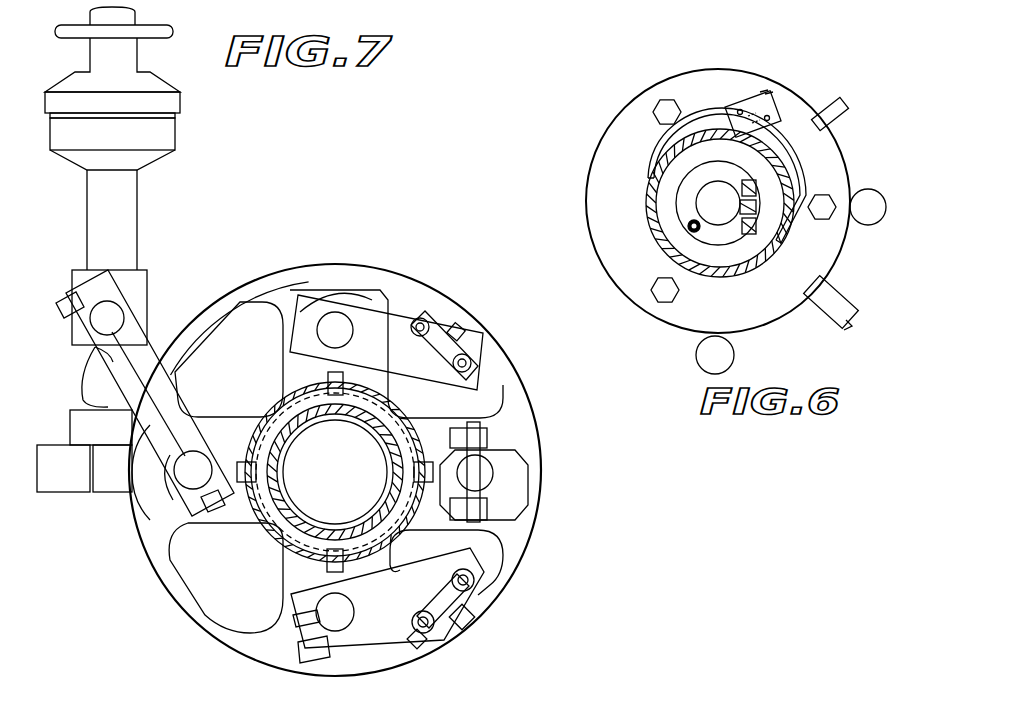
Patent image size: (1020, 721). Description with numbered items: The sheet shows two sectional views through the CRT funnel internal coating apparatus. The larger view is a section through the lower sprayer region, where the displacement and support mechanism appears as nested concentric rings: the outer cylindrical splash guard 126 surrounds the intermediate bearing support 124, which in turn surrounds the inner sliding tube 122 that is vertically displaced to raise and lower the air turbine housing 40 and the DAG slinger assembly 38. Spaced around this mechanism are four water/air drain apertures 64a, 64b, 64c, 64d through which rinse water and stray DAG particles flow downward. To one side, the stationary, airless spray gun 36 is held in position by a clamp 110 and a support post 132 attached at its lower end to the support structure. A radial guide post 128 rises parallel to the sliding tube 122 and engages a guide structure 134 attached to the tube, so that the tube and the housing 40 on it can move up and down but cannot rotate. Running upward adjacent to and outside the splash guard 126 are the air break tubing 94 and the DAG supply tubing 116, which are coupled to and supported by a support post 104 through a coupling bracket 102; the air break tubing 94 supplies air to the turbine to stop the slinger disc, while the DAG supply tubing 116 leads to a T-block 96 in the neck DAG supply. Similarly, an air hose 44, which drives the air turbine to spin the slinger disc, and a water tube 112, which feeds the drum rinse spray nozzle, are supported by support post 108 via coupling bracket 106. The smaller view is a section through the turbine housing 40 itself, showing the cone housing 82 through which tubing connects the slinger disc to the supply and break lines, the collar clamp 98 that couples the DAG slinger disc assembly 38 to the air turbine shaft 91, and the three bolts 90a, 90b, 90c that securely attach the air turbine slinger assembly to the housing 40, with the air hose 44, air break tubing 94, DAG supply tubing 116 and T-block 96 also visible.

In FIG. 7, the stationary, airless spray gun 36 is at (60, 197).
In FIG. 7, the clamp 110 is at (106, 352).
In FIG. 7, the support post 132 is at (185, 478).
In FIG. 7, the water/air drain aperture 64a is at (245, 572).
In FIG. 7, the water/air drain aperture 64b is at (252, 362).
In FIG. 7, the water/air drain aperture 64c is at (455, 410).
In FIG. 7, the water/air drain aperture 64d is at (433, 543).
In FIG. 7, the support post 104 is at (335, 328).
In FIG. 7, the coupling bracket 102 is at (408, 359).
In FIG. 7, the DAG supply tubing 116 is at (425, 318).
In FIG. 6, the DAG supply tubing 116 is at (768, 92).
In FIG. 7, the air break tubing 94 is at (470, 355).
In FIG. 6, the air break tubing 94 is at (830, 100).
In FIG. 7, the guide structure 134 is at (487, 442).
In FIG. 7, the radial guide post 128 is at (478, 473).
In FIG. 7, the cylindrical splash guard 126 is at (500, 505).
In FIG. 7, the bearing support 124 is at (400, 452).
In FIG. 7, the sliding tube 122 is at (383, 498).
In FIG. 7, the coupling bracket 106 is at (430, 604).
In FIG. 7, the support post 108 is at (335, 612).
In FIG. 7, the water tube 112 is at (436, 632).
In FIG. 7, the air hose 44 is at (477, 593).
In FIG. 6, the air hose 44 is at (842, 293).
In FIG. 7, the air turbine housing 40 is at (335, 470).
In FIG. 6, the air turbine housing 40 is at (762, 328).
In FIG. 6, the air turbine shaft 91 is at (728, 214).
In FIG. 6, the DAG slinger assembly 38 is at (693, 178).
In FIG. 6, the cone housing 82 is at (645, 222).
In FIG. 6, the collar clamp 98 is at (672, 173).
In FIG. 6, the T-block 96 is at (728, 92).
In FIG. 6, the bolt 90a is at (660, 294).
In FIG. 6, the bolt 90b is at (653, 97).
In FIG. 6, the bolt 90c is at (830, 195).